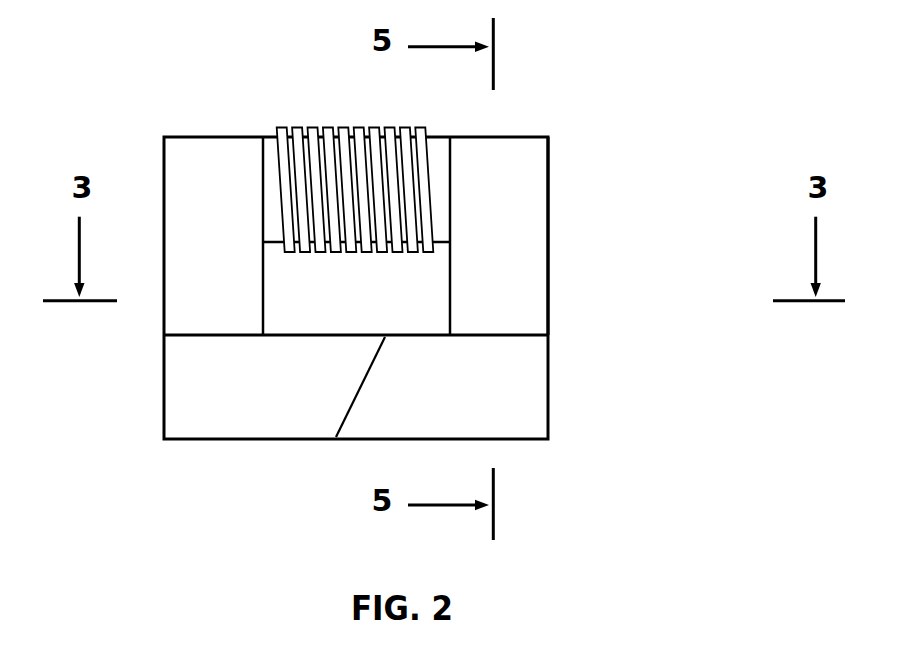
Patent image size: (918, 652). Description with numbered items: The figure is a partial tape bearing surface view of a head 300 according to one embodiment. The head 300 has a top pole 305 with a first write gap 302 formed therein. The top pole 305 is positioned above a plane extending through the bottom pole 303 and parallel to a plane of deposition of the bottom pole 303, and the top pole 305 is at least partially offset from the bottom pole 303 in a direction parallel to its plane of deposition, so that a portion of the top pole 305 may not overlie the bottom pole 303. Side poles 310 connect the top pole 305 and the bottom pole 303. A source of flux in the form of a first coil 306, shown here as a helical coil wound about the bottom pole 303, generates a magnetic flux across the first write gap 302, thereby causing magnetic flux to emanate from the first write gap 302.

The head 300 is at (156, 135).
The first write gap 302 is at (350, 402).
The bottom pole 303 is at (272, 141).
The top pole 305 is at (533, 383).
The first coil 306 is at (347, 130).
The side poles 310 is at (550, 238).